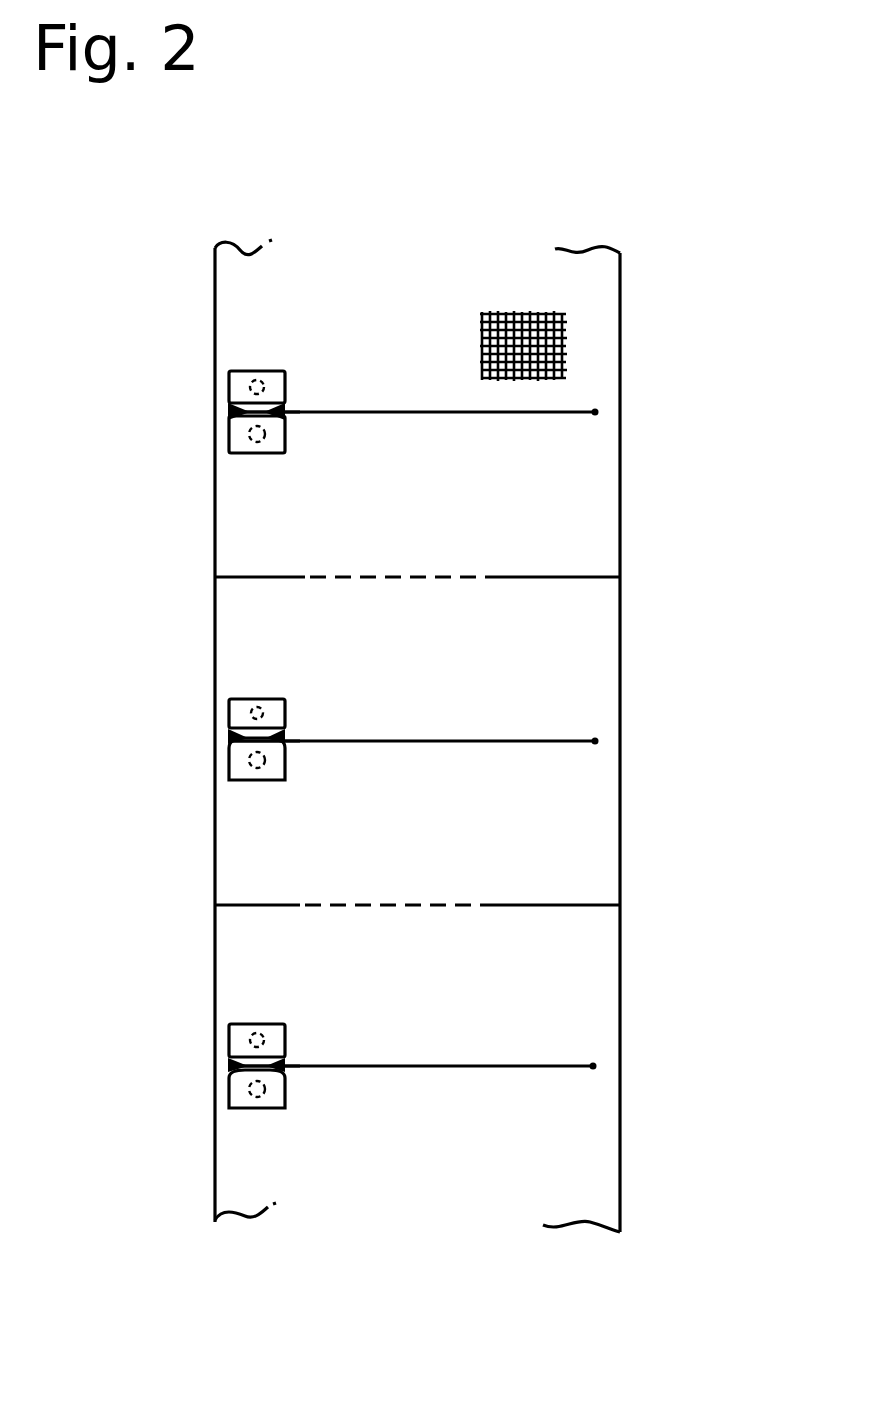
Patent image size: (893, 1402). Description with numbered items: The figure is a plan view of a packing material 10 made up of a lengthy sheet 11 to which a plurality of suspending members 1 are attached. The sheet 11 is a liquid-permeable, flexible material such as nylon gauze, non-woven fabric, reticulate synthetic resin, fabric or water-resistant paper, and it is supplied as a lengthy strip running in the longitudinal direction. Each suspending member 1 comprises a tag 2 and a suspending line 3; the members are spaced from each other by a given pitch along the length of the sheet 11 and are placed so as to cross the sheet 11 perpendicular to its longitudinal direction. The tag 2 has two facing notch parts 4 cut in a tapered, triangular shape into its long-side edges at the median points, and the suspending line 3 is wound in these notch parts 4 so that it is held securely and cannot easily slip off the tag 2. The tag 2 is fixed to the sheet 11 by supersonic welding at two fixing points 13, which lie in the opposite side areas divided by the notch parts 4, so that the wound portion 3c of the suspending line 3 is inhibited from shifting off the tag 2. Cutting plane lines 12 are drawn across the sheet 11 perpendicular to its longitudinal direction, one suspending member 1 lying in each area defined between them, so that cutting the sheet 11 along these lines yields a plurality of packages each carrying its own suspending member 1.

The suspending member 1 is at (380, 400).
The tag 2 is at (272, 370).
The suspending line 3 is at (468, 415).
The wound portion 3c is at (250, 404).
The notch parts 4 is at (228, 412).
The packing material 10 is at (675, 282).
The sheet 11 is at (600, 348).
The cutting plane line 12 is at (575, 577).
The fixing points 13 is at (255, 370).